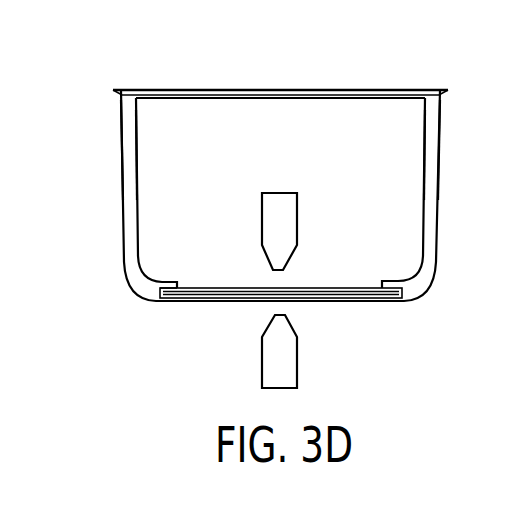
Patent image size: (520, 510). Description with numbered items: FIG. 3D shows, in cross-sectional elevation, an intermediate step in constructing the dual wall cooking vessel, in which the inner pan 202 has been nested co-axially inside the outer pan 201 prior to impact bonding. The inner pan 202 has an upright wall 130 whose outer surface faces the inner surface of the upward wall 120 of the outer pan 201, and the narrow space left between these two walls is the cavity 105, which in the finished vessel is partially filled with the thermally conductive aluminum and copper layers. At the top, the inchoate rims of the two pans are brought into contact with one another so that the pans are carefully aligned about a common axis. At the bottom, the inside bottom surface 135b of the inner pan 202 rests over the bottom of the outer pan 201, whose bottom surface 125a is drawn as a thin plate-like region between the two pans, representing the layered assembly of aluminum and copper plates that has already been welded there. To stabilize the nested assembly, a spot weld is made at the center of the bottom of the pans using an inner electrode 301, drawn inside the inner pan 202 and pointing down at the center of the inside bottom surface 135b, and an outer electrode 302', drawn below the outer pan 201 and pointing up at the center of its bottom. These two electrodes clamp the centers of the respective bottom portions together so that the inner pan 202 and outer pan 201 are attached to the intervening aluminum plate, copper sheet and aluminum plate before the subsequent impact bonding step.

The cavity 105 is at (128, 195).
The inner pan 202 is at (121, 122).
The upright wall 130 is at (121, 162).
The upward wall 120 is at (137, 170).
The outer pan bottom surface 125a is at (190, 300).
The inside bottom surface 135b is at (167, 284).
The inner electrode 301 is at (262, 212).
The outer electrode 302' is at (318, 351).
The outer pan 201 is at (401, 151).